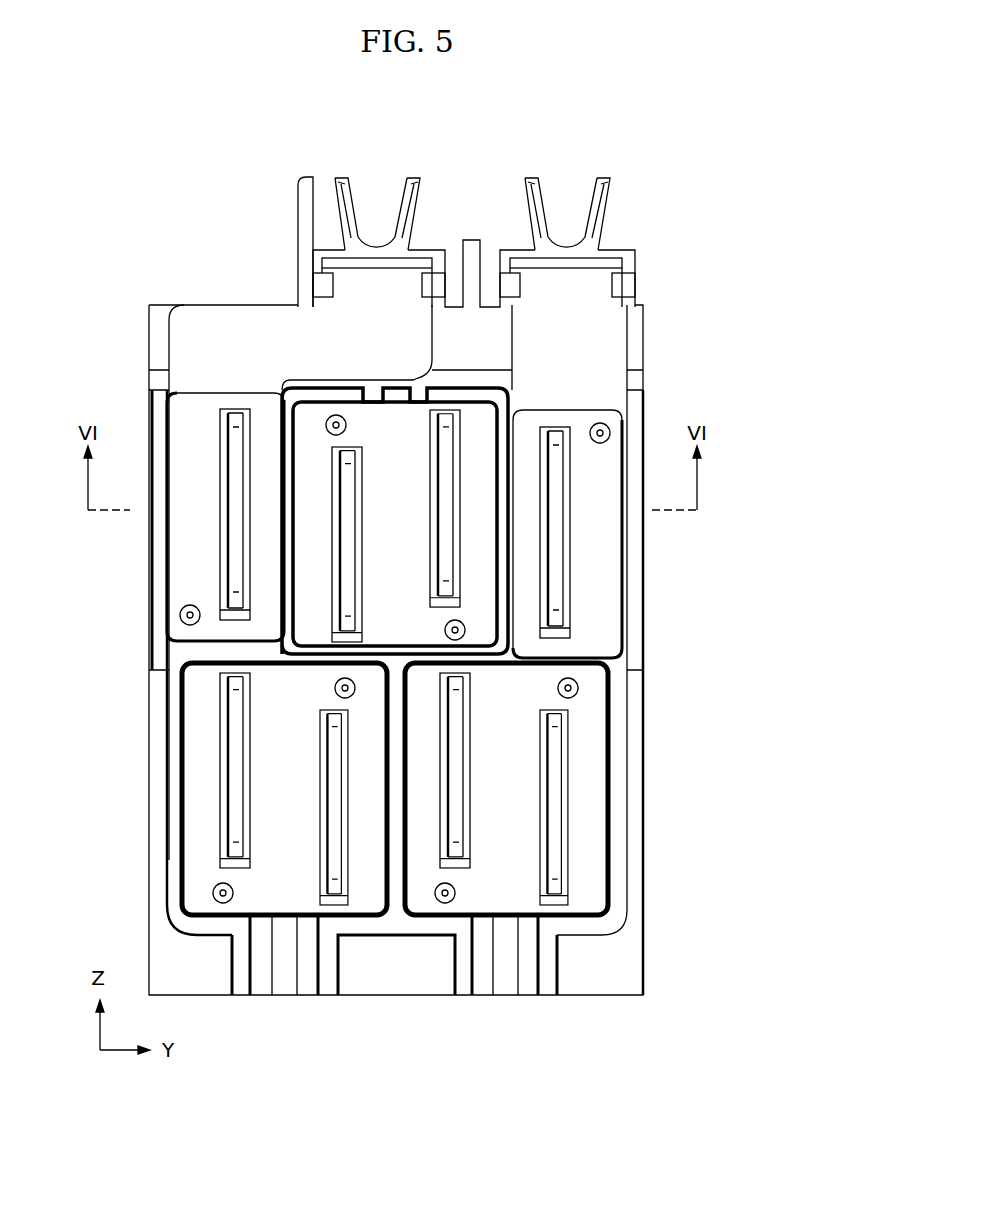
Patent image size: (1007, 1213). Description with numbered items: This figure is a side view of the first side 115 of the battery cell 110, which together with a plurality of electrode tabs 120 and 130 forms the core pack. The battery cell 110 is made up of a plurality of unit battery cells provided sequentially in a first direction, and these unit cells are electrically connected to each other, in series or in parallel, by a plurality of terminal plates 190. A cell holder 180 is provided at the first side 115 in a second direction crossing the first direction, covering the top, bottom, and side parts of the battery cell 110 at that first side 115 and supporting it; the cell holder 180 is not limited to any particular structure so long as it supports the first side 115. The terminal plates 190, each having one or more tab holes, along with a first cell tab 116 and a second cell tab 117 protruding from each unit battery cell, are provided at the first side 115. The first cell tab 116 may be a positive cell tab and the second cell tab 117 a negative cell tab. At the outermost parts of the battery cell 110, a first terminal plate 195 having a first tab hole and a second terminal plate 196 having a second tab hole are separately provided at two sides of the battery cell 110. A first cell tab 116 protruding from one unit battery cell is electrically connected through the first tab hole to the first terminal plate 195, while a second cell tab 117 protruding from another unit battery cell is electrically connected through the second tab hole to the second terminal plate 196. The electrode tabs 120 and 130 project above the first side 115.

The battery cell 110 is at (703, 150).
The first side 115 is at (169, 303).
The first cell tab 116 is at (340, 598).
The second cell tab 117 is at (240, 555).
The electrode tab 120 is at (603, 186).
The electrode tab 130 is at (410, 186).
The cell holder 180 is at (620, 957).
The terminal plate 190 is at (497, 884).
The first terminal plate 195 is at (596, 360).
The second terminal plate 196 is at (200, 355).